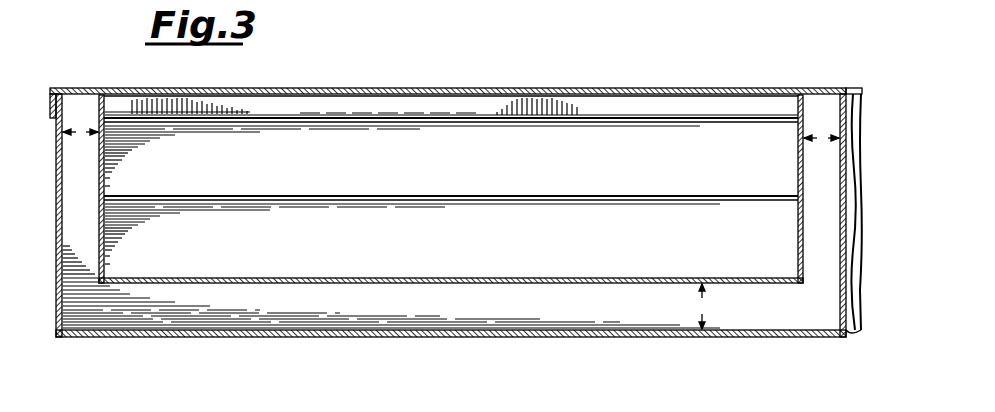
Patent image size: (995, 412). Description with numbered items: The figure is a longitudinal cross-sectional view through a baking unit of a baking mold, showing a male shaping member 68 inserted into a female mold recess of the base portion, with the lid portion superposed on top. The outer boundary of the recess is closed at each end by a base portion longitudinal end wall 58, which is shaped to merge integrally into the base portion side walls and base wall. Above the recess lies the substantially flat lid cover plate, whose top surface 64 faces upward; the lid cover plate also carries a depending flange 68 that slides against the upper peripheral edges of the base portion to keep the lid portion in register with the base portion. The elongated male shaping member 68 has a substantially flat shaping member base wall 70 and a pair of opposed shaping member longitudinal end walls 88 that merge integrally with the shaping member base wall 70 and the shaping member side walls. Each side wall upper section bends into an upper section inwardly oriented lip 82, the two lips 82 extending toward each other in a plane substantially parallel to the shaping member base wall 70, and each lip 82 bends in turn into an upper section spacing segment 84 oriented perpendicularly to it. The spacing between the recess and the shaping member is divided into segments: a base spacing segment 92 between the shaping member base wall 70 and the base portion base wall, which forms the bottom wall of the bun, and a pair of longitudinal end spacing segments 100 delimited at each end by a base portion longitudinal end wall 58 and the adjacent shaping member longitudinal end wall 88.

The base portion longitudinal end wall 58 is at (56, 305).
The top surface 64 is at (425, 88).
The male shaping member 68 is at (52, 105).
The shaping member base wall 70 is at (258, 283).
The upper section inwardly oriented lip 82 is at (318, 126).
The upper section spacing segment 84 is at (275, 107).
The shaping member longitudinal end wall 88 is at (100, 232).
The base spacing segment 92 is at (702, 306).
The longitudinal end spacing segment 100 is at (79, 134).